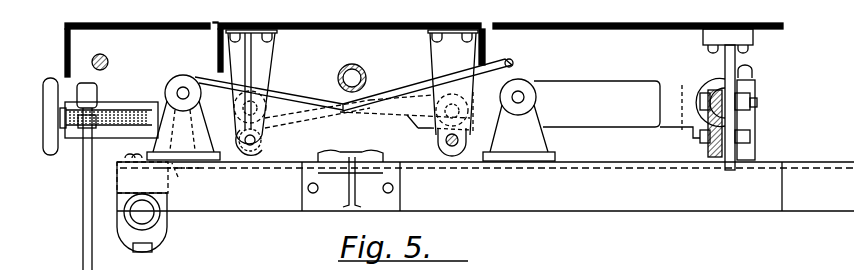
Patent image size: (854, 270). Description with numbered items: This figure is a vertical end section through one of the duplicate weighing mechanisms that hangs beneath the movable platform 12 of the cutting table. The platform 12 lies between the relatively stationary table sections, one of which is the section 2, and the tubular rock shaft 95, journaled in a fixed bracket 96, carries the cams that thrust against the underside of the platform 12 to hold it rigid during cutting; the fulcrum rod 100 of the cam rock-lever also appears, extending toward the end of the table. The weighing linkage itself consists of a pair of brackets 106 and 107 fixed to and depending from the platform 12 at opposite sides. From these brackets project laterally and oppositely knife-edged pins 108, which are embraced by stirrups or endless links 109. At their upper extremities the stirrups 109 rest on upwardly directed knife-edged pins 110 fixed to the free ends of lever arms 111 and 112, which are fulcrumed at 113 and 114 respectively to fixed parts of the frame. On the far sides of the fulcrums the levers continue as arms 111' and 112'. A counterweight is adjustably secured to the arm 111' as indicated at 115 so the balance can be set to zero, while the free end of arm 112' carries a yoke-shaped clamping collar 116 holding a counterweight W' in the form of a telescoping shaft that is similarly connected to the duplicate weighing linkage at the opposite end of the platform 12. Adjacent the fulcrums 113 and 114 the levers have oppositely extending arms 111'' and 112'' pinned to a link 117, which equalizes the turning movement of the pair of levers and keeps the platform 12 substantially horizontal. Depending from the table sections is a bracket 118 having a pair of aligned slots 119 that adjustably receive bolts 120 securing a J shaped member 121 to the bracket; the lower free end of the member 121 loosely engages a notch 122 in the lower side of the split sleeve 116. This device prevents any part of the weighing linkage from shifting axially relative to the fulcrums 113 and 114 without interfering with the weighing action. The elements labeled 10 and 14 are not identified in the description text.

The stationary table section 2 is at (153, 23).
The slot 10 is at (216, 24).
The platform 12 is at (300, 23).
The bearing bracket 14 is at (167, 222).
The tubular rock shaft 95 is at (352, 64).
The fixed bracket 96 is at (328, 200).
The fulcrum rod 100 is at (112, 50).
The bracket 106 is at (270, 52).
The bracket 107 is at (437, 50).
The knife-edged pin 108 is at (252, 153).
The stirrup 109 is at (265, 145).
The upwardly directed knife-edged pin 110 is at (278, 93).
The lever arm 111 is at (429, 119).
The lever arm 111' is at (227, 90).
The oppositely extending arm 111'' is at (183, 177).
The lever arm 112 is at (367, 92).
The lever arm 112' is at (617, 98).
The oppositely extending arm 112'' is at (525, 51).
The fulcrum 113 is at (184, 88).
The fulcrum 114 is at (523, 96).
The counterweight adjustment 115 is at (117, 137).
The yoke-shaped clamping collar 116 is at (700, 80).
The link 117 is at (390, 88).
The bracket 118 is at (728, 58).
The alined slot 119 is at (738, 82).
The bolt 120 is at (757, 100).
The J shaped member 121 is at (717, 153).
The notch 122 is at (708, 156).
The counterweight W' is at (667, 141).